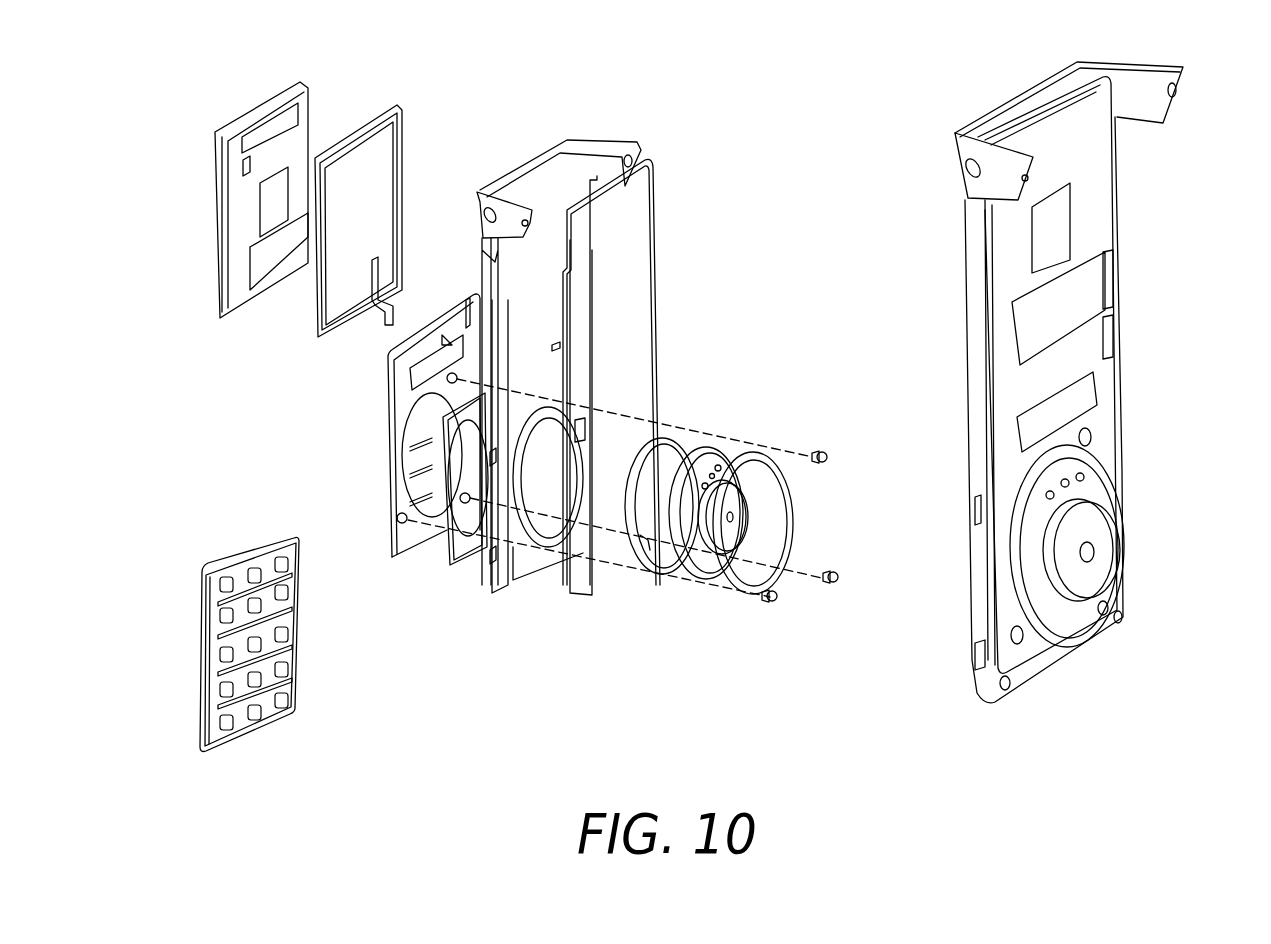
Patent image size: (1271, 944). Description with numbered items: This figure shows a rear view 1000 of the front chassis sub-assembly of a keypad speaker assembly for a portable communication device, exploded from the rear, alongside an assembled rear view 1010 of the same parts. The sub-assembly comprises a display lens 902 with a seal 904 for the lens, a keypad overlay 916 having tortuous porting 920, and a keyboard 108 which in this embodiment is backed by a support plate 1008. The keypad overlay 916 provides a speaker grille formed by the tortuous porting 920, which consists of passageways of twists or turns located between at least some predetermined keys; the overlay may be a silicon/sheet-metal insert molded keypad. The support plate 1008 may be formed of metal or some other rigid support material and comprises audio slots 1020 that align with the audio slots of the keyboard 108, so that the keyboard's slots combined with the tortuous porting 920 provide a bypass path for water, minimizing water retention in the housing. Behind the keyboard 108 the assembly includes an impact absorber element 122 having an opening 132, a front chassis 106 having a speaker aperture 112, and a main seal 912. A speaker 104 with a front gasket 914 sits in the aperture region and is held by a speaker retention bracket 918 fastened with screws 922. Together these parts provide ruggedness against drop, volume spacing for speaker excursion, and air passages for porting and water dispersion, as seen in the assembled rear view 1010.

The speaker 104 is at (723, 447).
The front chassis 106 is at (516, 580).
The keyboard 108 is at (387, 540).
The speaker aperture 112 is at (560, 568).
The impact absorber element 122 is at (452, 565).
The opening 132 is at (480, 542).
The display lens 902 is at (223, 322).
The seal 904 is at (318, 340).
The main seal 912 is at (660, 218).
The front gasket 914 is at (687, 436).
The keypad overlay 916 is at (195, 732).
The speaker retention bracket 918 is at (740, 598).
The tortuous porting 920 is at (218, 604).
The screws 922 is at (830, 590).
The rear view 1000 is at (1223, 785).
The support plate 1008 is at (415, 465).
The assembled rear view 1010 is at (1172, 62).
The audio slots 1020 is at (398, 507).